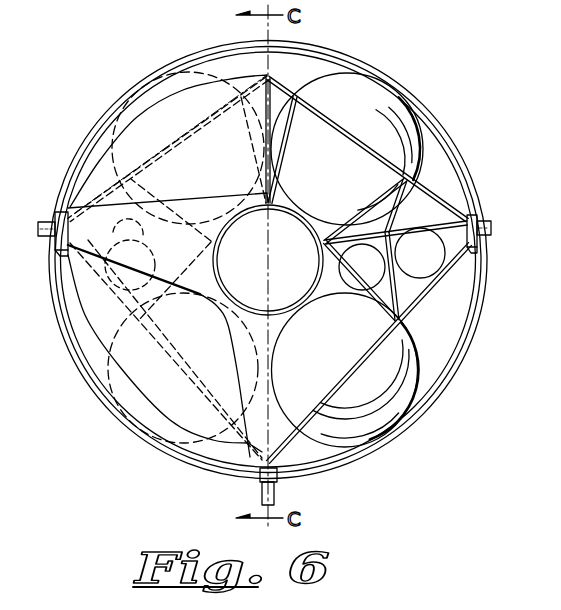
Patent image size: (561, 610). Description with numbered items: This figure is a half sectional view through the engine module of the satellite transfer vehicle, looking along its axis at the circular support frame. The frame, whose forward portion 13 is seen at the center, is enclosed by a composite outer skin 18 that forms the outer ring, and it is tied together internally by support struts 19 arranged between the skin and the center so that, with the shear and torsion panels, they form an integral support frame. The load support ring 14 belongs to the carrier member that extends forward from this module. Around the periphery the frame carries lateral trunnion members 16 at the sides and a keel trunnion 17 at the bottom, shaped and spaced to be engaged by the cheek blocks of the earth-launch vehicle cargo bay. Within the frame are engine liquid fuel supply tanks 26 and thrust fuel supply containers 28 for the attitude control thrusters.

The forward portion 13 is at (212, 277).
The load support ring 14 is at (453, 193).
The lateral trunnion members 16 is at (488, 218).
The keel trunnions 17 is at (275, 497).
The composite outer skin 18 is at (458, 366).
The internal support struts 19 is at (46, 218).
The engine liquid fuel supply tanks 26 is at (158, 86).
The thrust fuel supply containers 28 is at (129, 223).